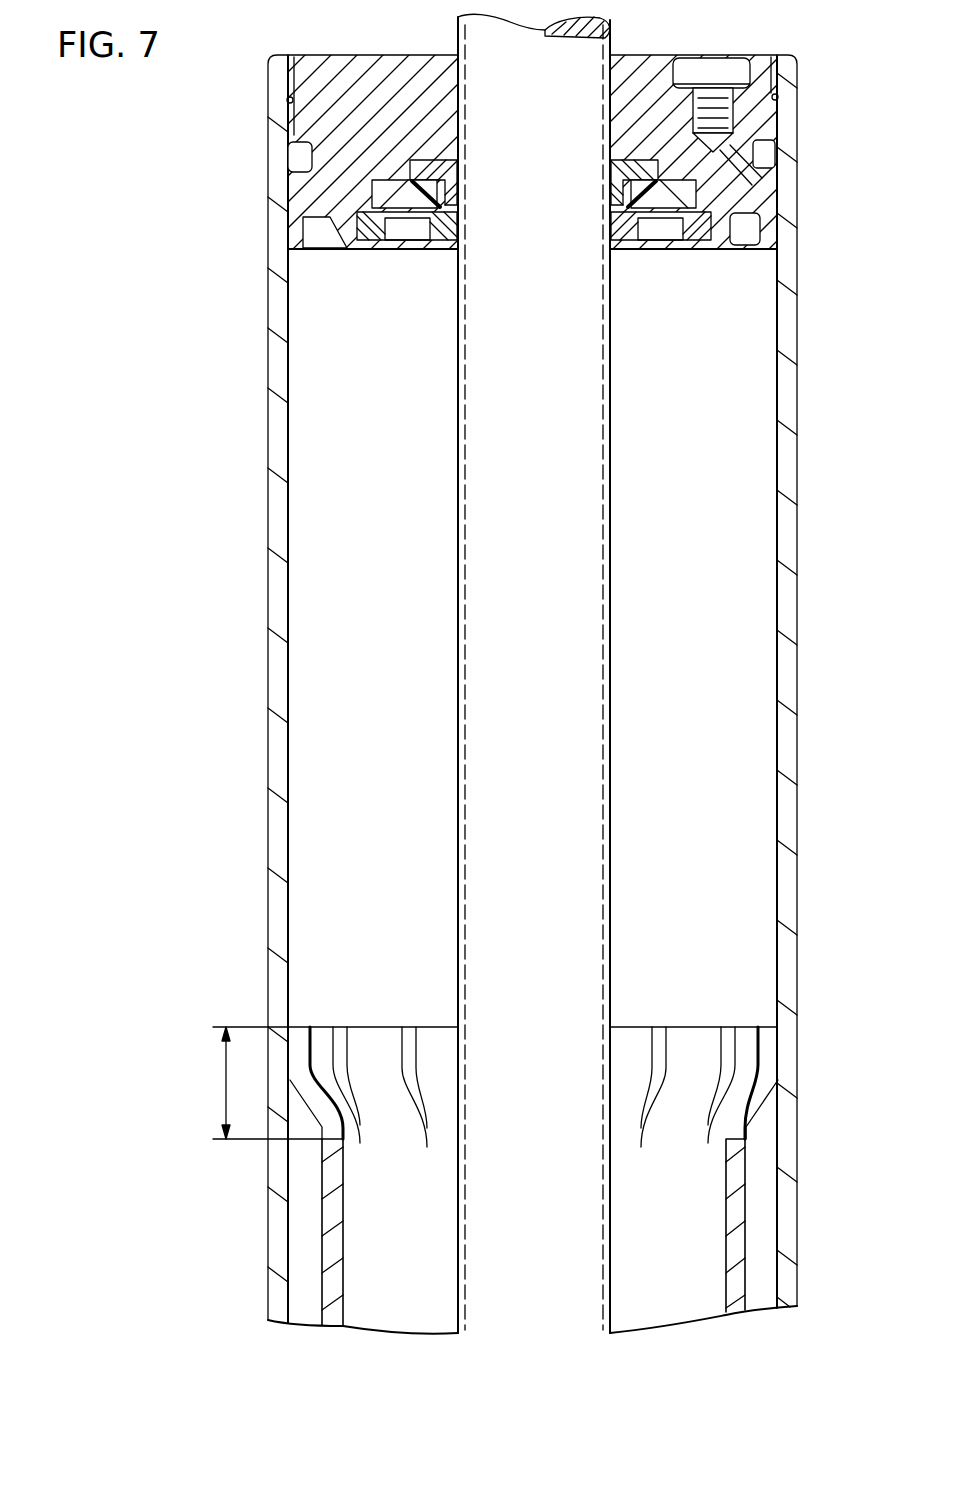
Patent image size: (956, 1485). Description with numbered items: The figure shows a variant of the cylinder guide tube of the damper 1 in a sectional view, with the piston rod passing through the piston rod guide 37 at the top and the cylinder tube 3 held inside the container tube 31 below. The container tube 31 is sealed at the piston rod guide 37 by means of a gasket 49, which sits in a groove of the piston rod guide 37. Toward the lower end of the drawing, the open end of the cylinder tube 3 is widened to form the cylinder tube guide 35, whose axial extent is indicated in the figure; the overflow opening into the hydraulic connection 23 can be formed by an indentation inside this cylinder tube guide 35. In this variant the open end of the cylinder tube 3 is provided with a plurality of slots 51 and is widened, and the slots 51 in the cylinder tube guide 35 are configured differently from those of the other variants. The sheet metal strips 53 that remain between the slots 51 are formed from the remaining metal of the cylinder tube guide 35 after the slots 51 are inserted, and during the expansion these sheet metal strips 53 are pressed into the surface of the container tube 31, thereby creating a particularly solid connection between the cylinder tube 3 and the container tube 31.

The vibration damper 1 is at (222, 648).
The cylinder tube 3 is at (733, 1255).
The hydraulic connection 23 is at (758, 1182).
The container tube 31 is at (270, 417).
The cylinder tube guide 35 is at (275, 1083).
The piston rod guide 37 is at (350, 180).
The gasket 49 is at (297, 153).
The slots 51 is at (725, 1035).
The sheet metal strips 53 is at (743, 1060).